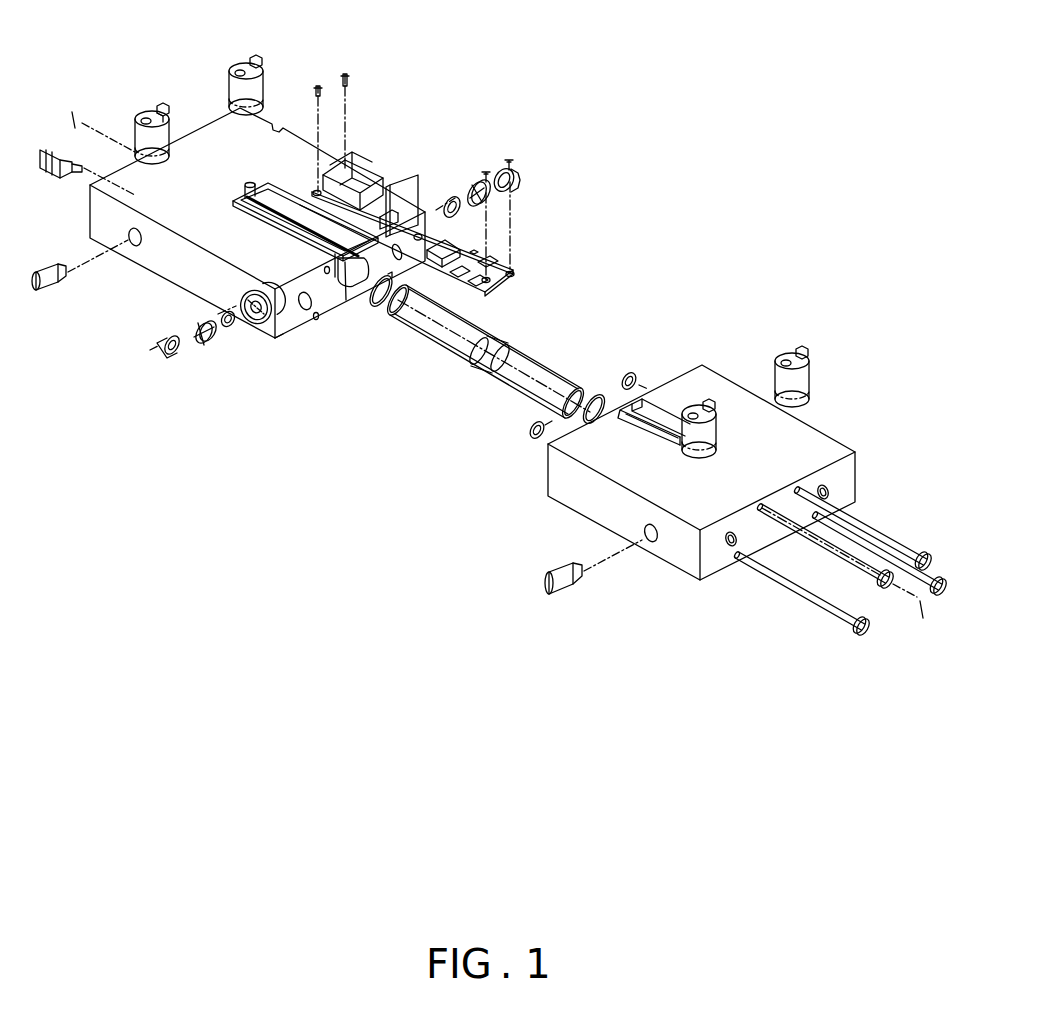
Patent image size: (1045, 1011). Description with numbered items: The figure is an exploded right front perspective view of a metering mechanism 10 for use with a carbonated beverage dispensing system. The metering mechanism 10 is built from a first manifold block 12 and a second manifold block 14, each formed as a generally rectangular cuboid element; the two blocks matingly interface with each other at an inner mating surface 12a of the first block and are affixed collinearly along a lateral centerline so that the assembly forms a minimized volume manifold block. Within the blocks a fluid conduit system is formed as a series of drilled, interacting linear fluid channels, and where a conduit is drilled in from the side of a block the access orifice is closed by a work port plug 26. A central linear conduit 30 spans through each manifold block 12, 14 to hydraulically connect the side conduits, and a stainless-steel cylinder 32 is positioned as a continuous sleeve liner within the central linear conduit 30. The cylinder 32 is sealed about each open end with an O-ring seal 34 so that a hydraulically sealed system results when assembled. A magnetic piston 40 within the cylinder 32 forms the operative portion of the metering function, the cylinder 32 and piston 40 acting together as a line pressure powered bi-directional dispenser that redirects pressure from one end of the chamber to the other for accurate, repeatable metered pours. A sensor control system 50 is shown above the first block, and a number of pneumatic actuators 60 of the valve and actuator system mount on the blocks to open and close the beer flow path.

The metering mechanism 10 is at (293, 562).
The first manifold block 12 is at (165, 270).
The inner mating surface 12a is at (286, 330).
The second manifold block 14 is at (725, 368).
The work port plug 26 is at (40, 268).
The central linear conduit 30 is at (349, 288).
The stainless-steel cylinder 32 is at (473, 325).
The O-ring seal 34 is at (376, 310).
The magnetic piston 40 is at (478, 356).
The sensor control system 50 is at (408, 101).
The pneumatic actuator 60 is at (163, 118).